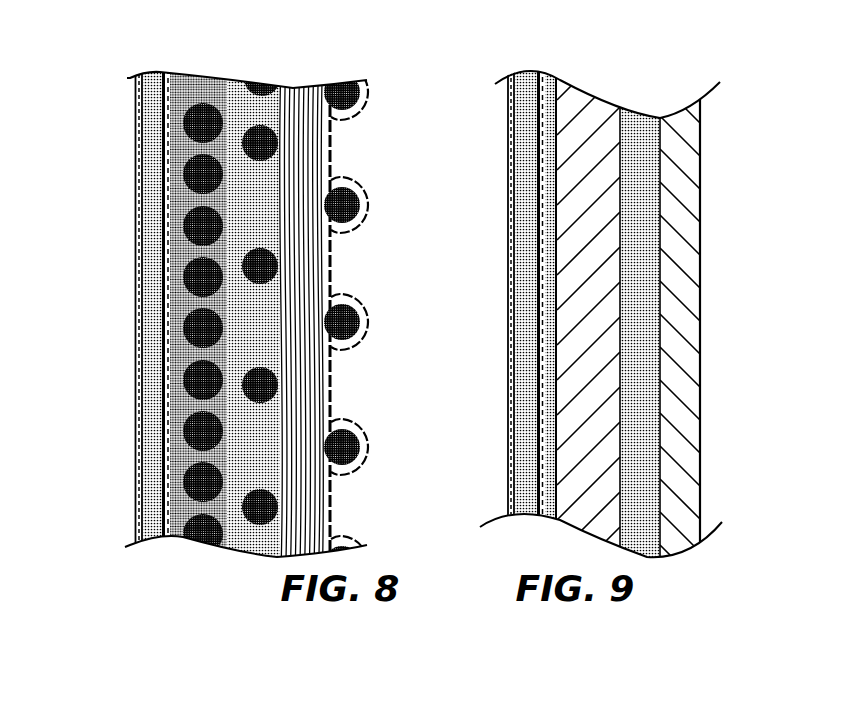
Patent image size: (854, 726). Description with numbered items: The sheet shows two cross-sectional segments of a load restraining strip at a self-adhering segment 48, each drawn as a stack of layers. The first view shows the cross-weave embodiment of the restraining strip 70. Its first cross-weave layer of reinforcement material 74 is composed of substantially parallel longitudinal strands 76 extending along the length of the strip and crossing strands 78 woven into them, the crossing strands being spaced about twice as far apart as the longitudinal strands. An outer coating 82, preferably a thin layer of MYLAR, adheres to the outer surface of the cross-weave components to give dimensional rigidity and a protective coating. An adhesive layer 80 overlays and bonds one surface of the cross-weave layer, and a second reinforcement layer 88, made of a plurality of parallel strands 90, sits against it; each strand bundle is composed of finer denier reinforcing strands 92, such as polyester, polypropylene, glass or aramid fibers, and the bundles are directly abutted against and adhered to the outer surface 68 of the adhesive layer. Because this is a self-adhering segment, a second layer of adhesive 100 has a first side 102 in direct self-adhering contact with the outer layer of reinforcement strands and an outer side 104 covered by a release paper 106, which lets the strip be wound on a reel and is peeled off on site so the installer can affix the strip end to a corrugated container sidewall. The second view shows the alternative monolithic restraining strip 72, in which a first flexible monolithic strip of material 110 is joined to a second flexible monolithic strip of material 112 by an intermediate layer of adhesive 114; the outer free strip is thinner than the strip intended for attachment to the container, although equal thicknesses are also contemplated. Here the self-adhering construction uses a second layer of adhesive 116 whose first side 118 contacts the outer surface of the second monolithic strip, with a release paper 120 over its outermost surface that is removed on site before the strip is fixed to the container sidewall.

In FIG. 8, the self-adhering segment 48 is at (129, 301).
In FIG. 9, the self-adhering segment 48 is at (493, 310).
In FIG. 8, the outer surface of the first adhesive layer 68 is at (228, 88).
In FIG. 8, the cross-weave load restraining strip 70 is at (333, 300).
In FIG. 9, the monolithic restraining strip 72 is at (655, 328).
In FIG. 8, the cross-weave layer of reinforcement material 74 is at (325, 80).
In FIG. 8, the longitudinal strands 76 is at (250, 84).
In FIG. 8, the crossing strands 78 is at (293, 88).
In FIG. 8, the adhesive layer 80 is at (273, 320).
In FIG. 8, the outer coating 82 is at (368, 205).
In FIG. 8, the second reinforcement layer 88 is at (190, 72).
In FIG. 8, the parallel strands 90 is at (170, 434).
In FIG. 8, the finer denier reinforcing strands 92 is at (187, 454).
In FIG. 8, the second layer of adhesive 100 is at (145, 541).
In FIG. 8, the first side of the second adhesive layer 102 is at (160, 72).
In FIG. 8, the outer side of the second adhesive layer 104 is at (134, 88).
In FIG. 8, the release paper 106 is at (142, 236).
In FIG. 9, the first flexible monolithic strip of material 110 is at (680, 302).
In FIG. 9, the second flexible monolithic strip of material 112 is at (566, 257).
In FIG. 9, the intermediate layer of adhesive 114 is at (647, 545).
In FIG. 9, the second layer of adhesive 116 is at (505, 300).
In FIG. 9, the first side of the second adhesive layer 118 is at (562, 93).
In FIG. 9, the release paper 120 is at (510, 380).